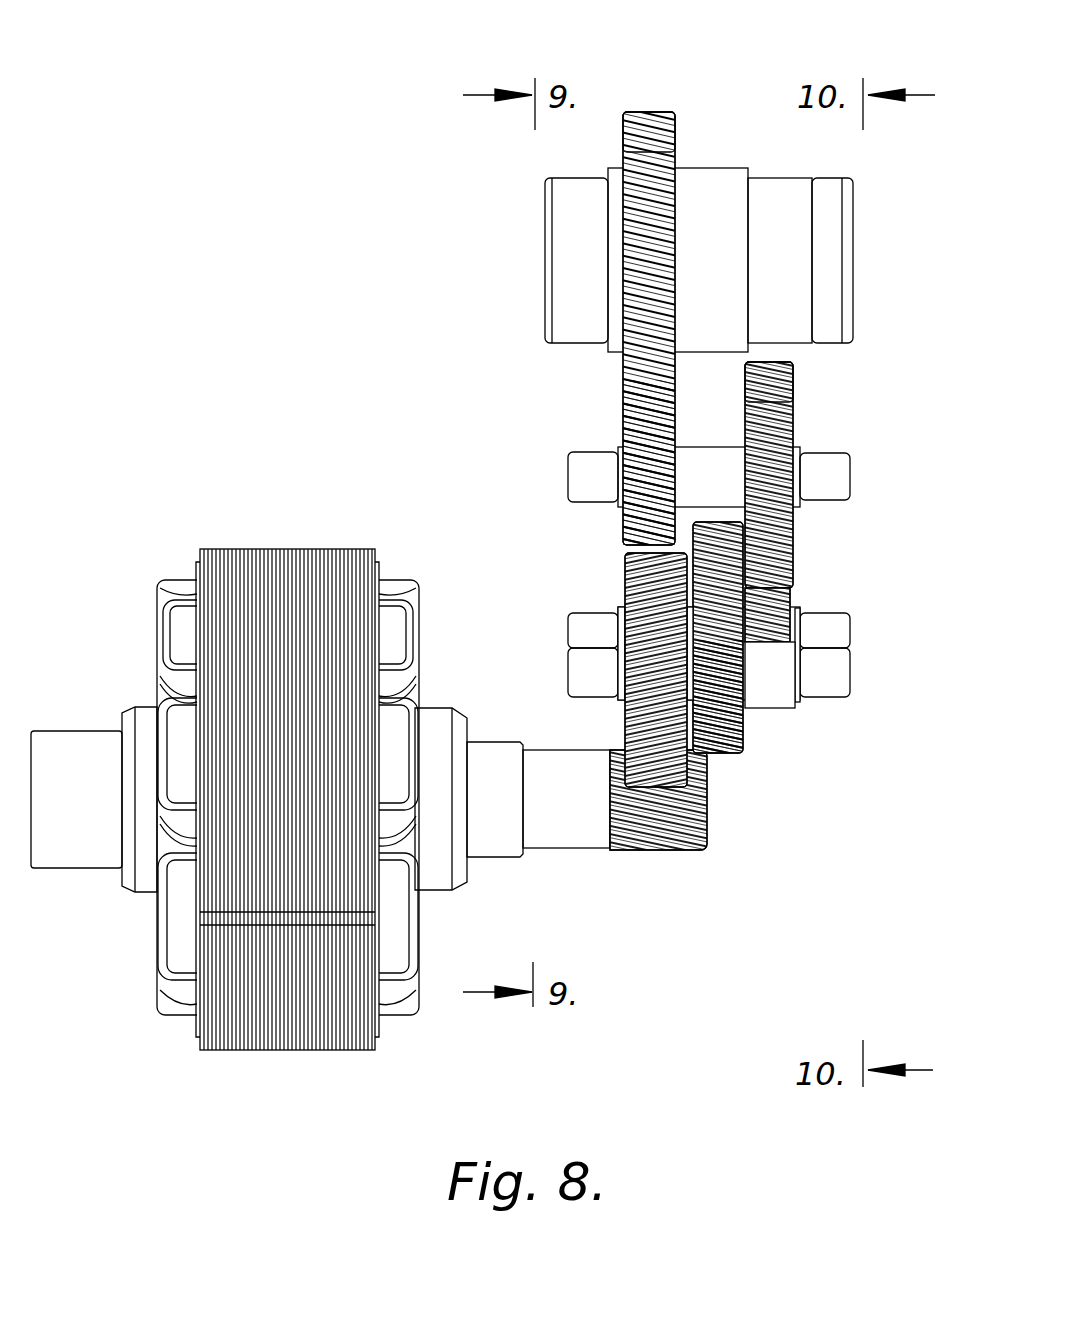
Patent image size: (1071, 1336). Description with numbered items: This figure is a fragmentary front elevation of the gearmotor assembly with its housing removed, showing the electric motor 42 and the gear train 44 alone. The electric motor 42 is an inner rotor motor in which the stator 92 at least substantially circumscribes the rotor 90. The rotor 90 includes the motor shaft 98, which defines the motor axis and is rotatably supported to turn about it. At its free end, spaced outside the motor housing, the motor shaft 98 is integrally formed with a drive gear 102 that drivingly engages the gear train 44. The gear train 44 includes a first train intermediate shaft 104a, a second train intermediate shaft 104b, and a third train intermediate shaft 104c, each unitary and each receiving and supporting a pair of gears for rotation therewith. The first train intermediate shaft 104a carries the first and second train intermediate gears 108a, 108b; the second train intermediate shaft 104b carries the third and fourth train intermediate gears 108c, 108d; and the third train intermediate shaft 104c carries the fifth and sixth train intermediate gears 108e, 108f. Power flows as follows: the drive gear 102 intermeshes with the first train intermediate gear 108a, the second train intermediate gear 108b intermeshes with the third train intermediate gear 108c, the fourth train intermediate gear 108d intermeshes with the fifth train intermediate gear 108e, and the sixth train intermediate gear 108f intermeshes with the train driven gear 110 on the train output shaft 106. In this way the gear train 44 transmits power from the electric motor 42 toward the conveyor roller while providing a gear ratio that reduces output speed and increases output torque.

The electric motor 42 is at (270, 560).
The stator 92 is at (327, 1037).
The rotor 90 is at (483, 757).
The motor shaft 98 is at (552, 833).
The drive gear 102 is at (688, 840).
The train output shaft 106 is at (565, 218).
The train driven gear 110 is at (651, 112).
The gear train 44 is at (668, 120).
The first train intermediate shaft 104a is at (818, 685).
The second train intermediate shaft 104b is at (830, 633).
The third train intermediate shaft 104c is at (823, 463).
The first train intermediate gear 108a is at (640, 580).
The second train intermediate gear 108b is at (745, 728).
The third train intermediate gear 108c is at (723, 540).
The fourth train intermediate gear 108d is at (788, 603).
The fifth train intermediate gear 108e is at (757, 408).
The sixth train intermediate gear 108f is at (640, 430).